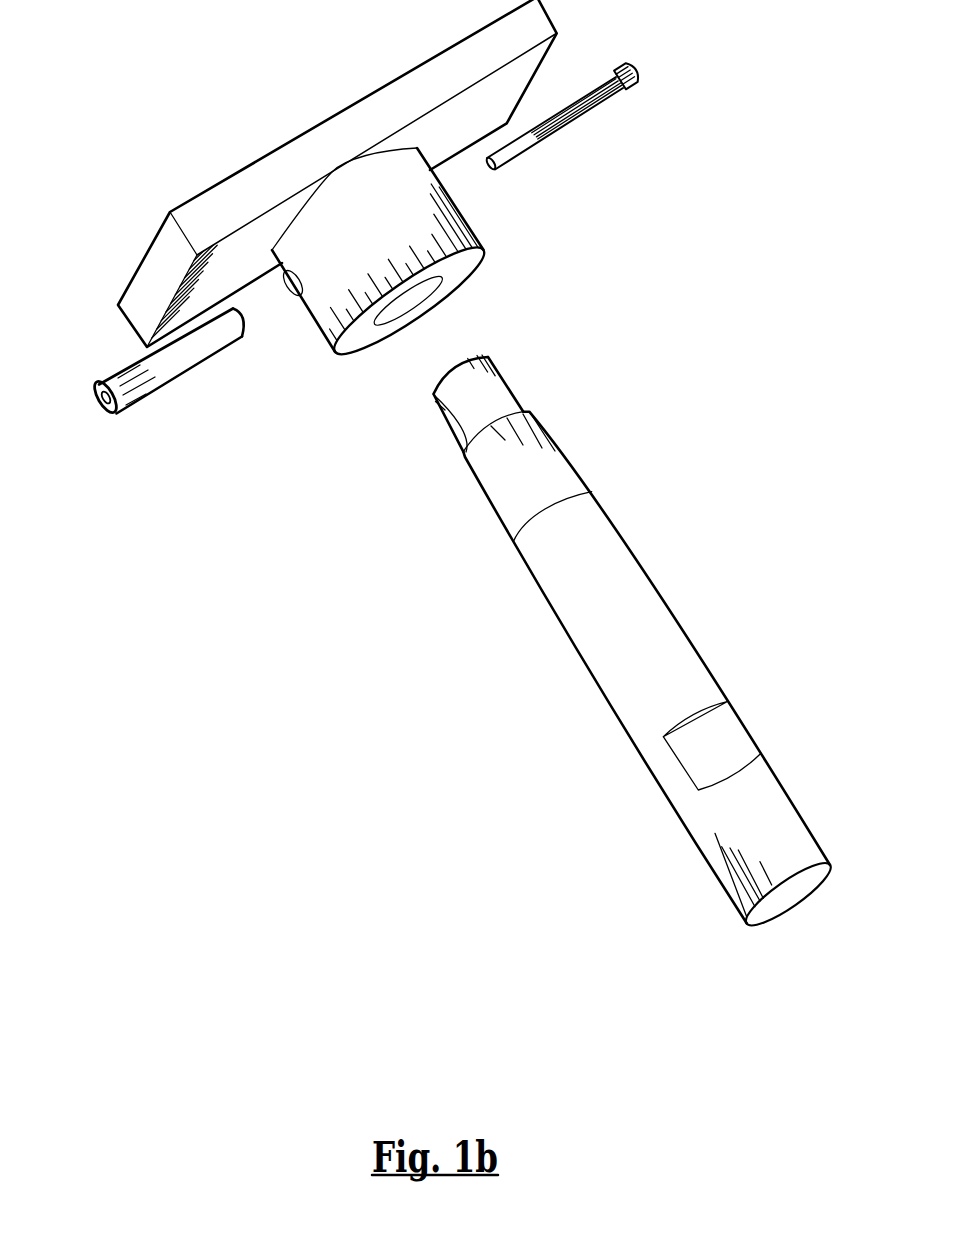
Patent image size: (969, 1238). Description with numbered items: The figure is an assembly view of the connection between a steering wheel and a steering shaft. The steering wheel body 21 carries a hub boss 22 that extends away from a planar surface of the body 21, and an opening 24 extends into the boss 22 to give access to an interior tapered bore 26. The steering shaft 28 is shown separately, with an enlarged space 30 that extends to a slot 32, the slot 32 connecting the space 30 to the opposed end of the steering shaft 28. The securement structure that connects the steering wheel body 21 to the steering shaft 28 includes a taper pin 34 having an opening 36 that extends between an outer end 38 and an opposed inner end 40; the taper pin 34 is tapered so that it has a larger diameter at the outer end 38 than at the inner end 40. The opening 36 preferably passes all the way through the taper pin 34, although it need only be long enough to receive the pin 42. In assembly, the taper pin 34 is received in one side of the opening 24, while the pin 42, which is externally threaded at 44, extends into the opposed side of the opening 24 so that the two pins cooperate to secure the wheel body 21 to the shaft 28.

The body 21 is at (278, 124).
The hub boss 22 is at (347, 350).
The opening 24 is at (293, 289).
The interior tapered bore 26 is at (403, 308).
The steering shaft 28 is at (596, 425).
The enlarged space 30 is at (441, 414).
The slot 32 is at (434, 397).
The taper pin 34 is at (138, 422).
The opening 36 is at (103, 400).
The outer end 38 is at (101, 387).
The opposed inner end 40 is at (238, 339).
The pin 42 is at (654, 109).
The external threads 44 is at (539, 137).